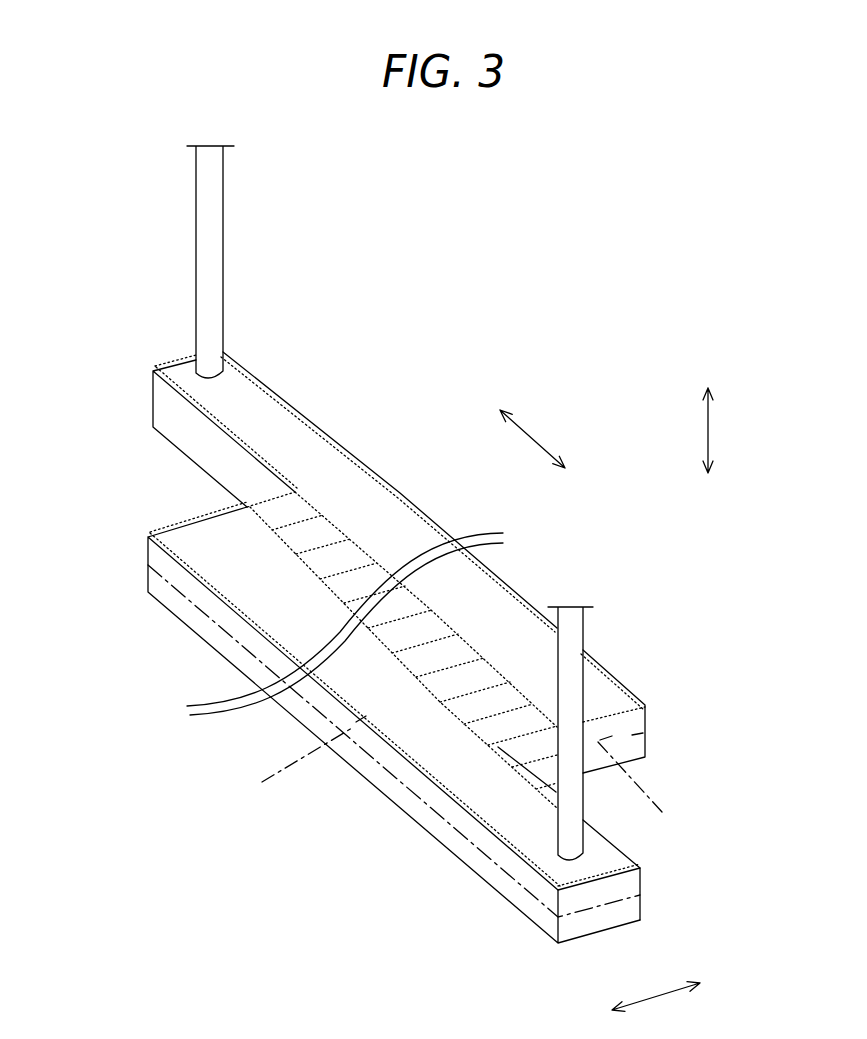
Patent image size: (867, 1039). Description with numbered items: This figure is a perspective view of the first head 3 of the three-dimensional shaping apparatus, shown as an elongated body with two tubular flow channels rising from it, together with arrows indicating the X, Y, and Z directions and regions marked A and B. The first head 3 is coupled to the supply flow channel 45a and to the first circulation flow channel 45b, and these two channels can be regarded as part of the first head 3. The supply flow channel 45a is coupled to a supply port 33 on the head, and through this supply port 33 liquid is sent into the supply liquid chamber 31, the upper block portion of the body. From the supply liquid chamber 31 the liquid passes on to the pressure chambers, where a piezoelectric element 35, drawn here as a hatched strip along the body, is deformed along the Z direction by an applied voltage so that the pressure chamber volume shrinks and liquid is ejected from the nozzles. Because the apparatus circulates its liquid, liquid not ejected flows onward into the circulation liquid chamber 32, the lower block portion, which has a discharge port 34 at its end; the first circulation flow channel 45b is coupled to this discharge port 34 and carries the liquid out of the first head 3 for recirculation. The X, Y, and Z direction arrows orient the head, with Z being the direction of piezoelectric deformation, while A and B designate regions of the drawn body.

The first head 3 is at (550, 307).
The supply liquid chamber 31 is at (290, 433).
The circulation liquid chamber 32 is at (440, 774).
The supply port 33 is at (223, 352).
The discharge port 34 is at (637, 860).
The piezoelectric element 35 is at (270, 518).
The supply flow channel 45a is at (215, 190).
The first circulation flow channel 45b is at (570, 662).
The region A is at (641, 782).
The region B is at (305, 762).
The X axis X is at (656, 984).
The Y axis Y is at (532, 442).
The Z direction Z is at (696, 430).